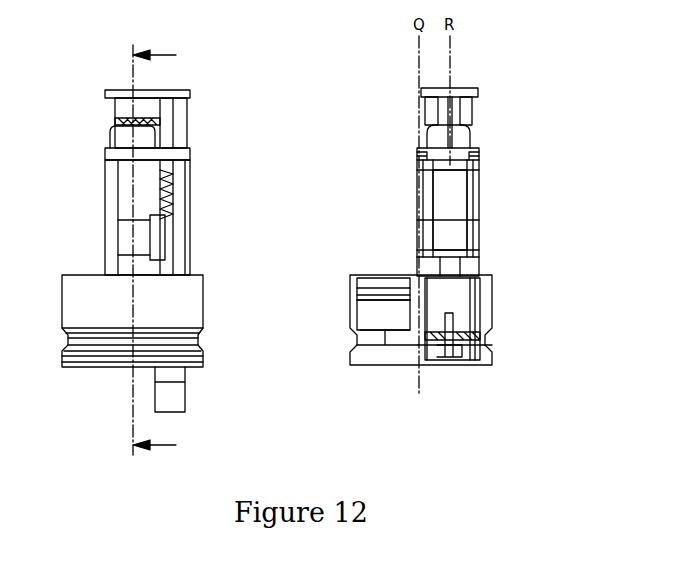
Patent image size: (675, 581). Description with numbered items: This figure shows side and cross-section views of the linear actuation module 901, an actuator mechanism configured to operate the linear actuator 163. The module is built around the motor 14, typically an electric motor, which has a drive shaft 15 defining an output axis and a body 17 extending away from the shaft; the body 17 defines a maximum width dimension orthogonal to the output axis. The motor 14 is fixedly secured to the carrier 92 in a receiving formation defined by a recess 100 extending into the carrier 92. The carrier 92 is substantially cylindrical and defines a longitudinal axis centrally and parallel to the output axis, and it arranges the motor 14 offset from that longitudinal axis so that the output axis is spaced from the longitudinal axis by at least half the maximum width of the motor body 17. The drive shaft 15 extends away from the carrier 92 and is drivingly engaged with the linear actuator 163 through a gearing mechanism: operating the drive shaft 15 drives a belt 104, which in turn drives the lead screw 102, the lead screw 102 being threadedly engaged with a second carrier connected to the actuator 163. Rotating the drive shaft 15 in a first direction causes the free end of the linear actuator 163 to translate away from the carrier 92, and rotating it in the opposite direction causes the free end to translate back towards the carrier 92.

The linear actuation module 901 is at (74, 68).
The motor 14 is at (122, 190).
The belt 104 is at (188, 104).
The lead screw 102 is at (166, 186).
The carrier 92 is at (190, 297).
The linear actuator 163 is at (173, 406).
The drive shaft 15 is at (457, 127).
The body 17 is at (450, 210).
The recess 100 is at (383, 300).